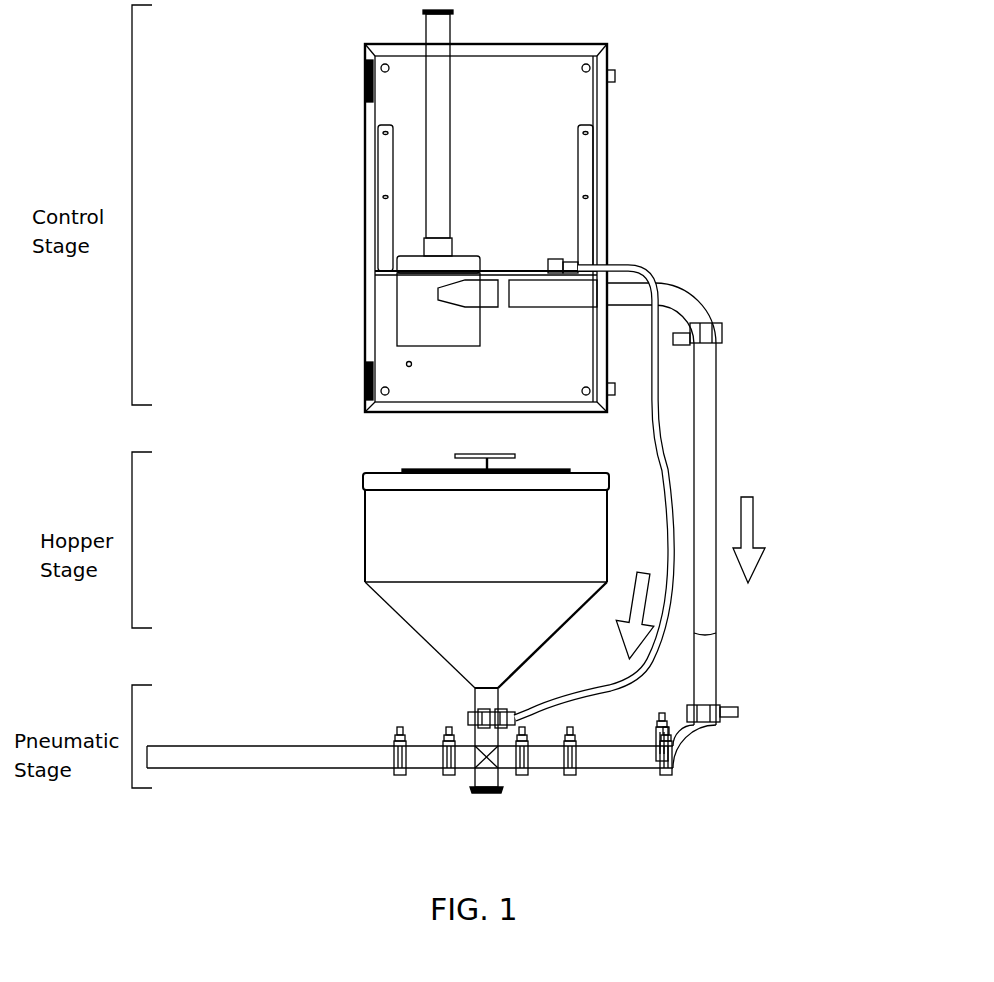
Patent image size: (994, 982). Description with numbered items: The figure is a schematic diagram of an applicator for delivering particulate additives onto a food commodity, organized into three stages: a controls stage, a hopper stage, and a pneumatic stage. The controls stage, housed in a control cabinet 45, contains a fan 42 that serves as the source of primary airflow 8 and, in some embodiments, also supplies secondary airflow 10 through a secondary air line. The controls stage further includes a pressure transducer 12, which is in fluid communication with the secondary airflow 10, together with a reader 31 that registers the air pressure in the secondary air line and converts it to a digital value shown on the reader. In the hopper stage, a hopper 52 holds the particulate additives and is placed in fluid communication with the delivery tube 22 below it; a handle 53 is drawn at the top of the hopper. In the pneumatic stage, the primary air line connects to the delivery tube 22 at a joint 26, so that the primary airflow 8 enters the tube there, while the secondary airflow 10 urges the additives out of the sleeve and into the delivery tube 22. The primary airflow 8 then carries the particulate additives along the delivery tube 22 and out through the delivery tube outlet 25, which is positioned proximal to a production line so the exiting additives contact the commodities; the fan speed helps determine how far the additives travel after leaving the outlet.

The primary airflow 8 is at (724, 529).
The secondary airflow 10 is at (686, 493).
The pressure transducer 12 is at (573, 263).
The delivery tube 22 is at (427, 756).
The delivery tube outlet 25 is at (410, 731).
The joint 26 is at (570, 783).
The reader 31 is at (620, 213).
The fan 42 is at (365, 306).
The control cabinet 45 is at (371, 141).
The hopper 52 is at (429, 578).
The hopper handle 53 is at (455, 457).